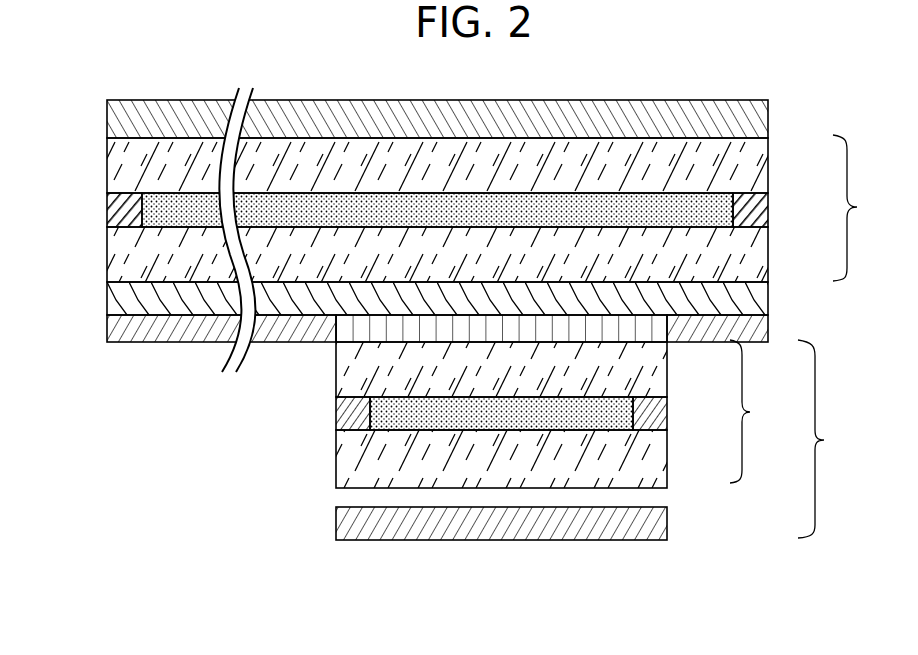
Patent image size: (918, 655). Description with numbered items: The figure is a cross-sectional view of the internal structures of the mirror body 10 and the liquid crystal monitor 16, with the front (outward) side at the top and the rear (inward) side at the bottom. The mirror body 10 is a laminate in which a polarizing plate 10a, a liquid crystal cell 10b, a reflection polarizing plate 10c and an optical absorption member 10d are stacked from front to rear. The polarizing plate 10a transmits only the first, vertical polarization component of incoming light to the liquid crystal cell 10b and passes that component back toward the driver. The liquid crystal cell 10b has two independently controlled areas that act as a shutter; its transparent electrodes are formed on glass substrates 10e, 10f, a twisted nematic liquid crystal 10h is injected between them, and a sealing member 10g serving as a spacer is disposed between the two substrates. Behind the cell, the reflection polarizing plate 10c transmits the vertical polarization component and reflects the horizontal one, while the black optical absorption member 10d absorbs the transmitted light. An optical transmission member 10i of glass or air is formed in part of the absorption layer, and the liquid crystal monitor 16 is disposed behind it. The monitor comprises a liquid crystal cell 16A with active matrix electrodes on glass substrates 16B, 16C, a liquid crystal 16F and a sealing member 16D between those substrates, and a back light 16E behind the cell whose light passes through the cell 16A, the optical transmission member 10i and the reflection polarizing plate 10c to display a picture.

The mirror body 10 is at (766, 86).
The polarizing plate 10a is at (767, 120).
The liquid crystal cell 10b is at (873, 208).
The reflection polarizing plate 10c is at (750, 294).
The optical absorption member 10d is at (768, 321).
The glass substrate 10e is at (128, 170).
The glass substrate 10f is at (128, 262).
The sealing member 10g is at (108, 210).
The liquid crystal 10h is at (197, 223).
The optical transmission member 10i is at (387, 340).
The liquid crystal monitor 16 is at (832, 439).
The liquid crystal cell 16A is at (767, 411).
The glass substrate 16B is at (354, 376).
The glass substrate 16C is at (350, 455).
The sealing member 16D is at (341, 424).
The back light 16E is at (667, 522).
The liquid crystal 16F is at (386, 430).